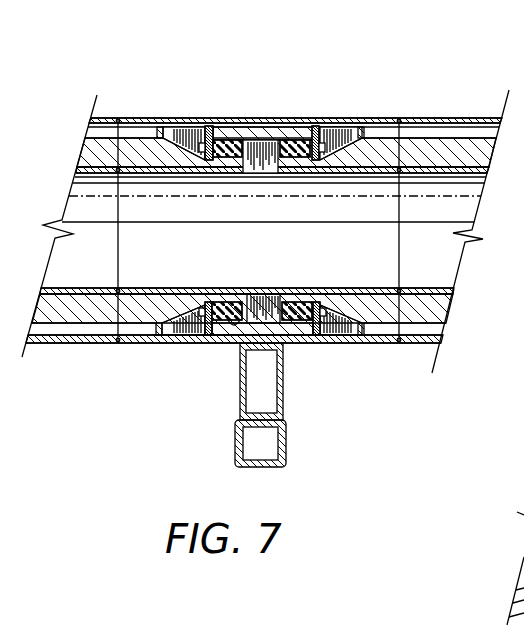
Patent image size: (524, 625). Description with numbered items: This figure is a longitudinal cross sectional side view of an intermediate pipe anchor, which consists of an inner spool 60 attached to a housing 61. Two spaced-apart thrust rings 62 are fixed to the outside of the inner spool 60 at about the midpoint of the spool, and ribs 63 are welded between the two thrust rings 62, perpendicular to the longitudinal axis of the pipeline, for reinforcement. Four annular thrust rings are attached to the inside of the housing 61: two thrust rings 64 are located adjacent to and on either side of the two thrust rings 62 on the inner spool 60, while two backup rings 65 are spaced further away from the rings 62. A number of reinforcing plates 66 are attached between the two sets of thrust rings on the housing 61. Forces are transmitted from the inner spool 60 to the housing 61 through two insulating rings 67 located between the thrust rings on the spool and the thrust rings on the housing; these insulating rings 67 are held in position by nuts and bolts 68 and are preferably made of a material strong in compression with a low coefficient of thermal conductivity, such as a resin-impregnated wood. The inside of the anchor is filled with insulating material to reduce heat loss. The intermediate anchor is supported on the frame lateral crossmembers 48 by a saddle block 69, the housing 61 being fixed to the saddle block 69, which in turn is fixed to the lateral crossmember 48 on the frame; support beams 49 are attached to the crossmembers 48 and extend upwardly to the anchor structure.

The lateral crossmember 48 is at (235, 440).
The support beam 49 is at (222, 118).
The inner spool 60 is at (238, 173).
The housing 61 is at (389, 120).
The thrust ring 62 is at (245, 140).
The rib 63 is at (267, 143).
The thrust ring 64 is at (218, 337).
The backup ring 65 is at (157, 132).
The reinforcing plate 66 is at (177, 130).
The insulating ring 67 is at (214, 126).
The nuts and bolts 68 is at (200, 151).
The saddle block 69 is at (238, 400).